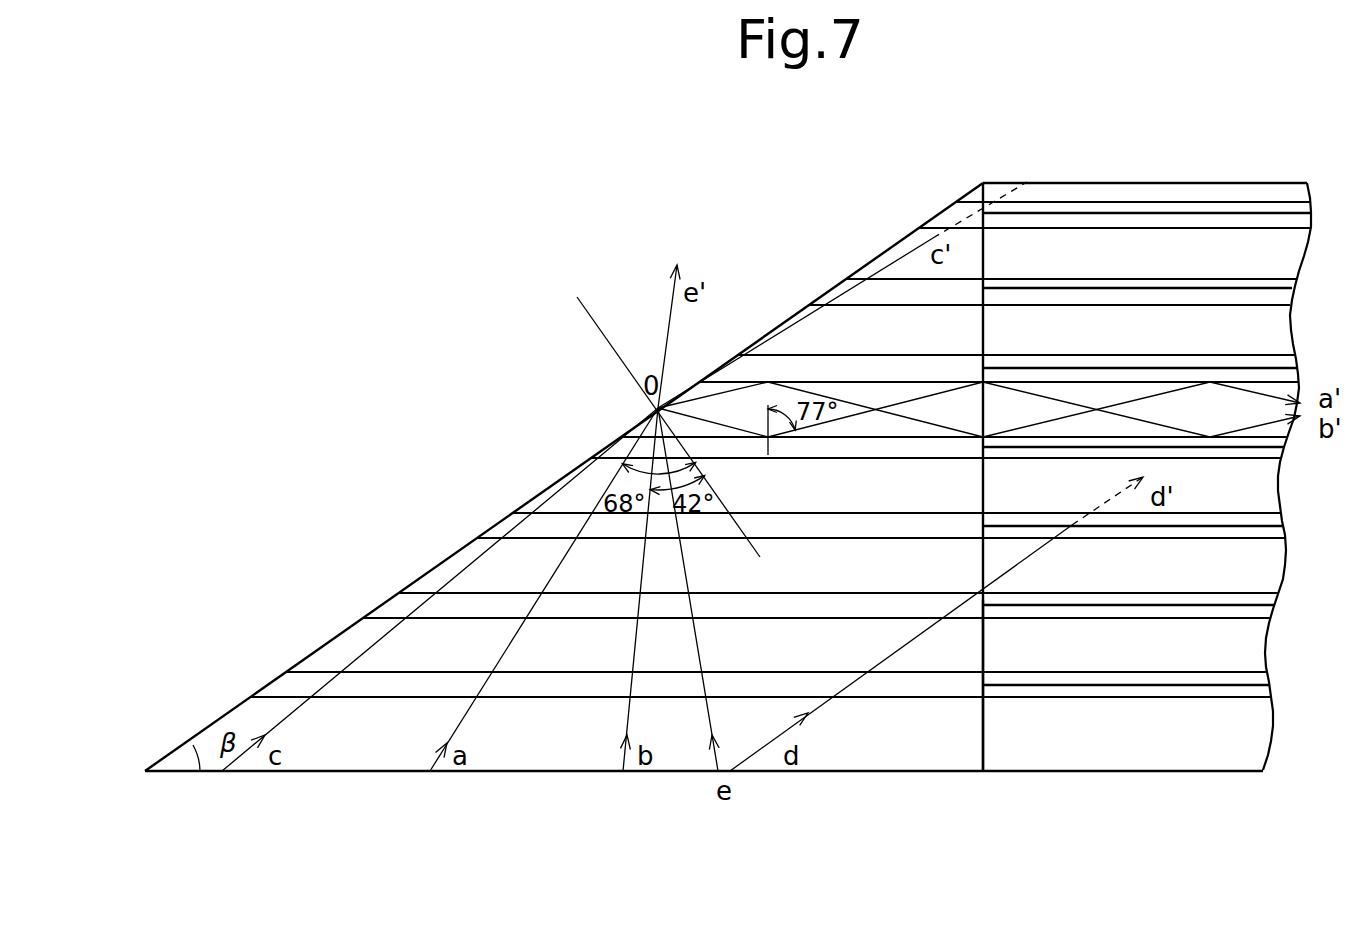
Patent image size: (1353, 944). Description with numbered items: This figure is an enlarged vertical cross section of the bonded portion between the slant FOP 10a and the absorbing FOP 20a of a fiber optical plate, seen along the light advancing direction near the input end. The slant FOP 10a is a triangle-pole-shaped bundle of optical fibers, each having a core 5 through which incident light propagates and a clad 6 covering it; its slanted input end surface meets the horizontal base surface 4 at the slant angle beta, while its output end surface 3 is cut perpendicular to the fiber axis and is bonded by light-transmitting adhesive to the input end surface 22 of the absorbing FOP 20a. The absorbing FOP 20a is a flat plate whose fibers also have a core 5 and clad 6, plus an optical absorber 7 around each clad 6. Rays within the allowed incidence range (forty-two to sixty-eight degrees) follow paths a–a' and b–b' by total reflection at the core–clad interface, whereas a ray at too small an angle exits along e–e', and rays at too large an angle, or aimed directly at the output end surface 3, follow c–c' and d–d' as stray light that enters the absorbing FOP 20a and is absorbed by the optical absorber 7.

The output end surface 3 is at (978, 740).
The light incident end face 4 is at (590, 773).
The core 5 is at (328, 650).
The clad 6 is at (292, 684).
The optical absorber 7 is at (1170, 232).
The slant FOP 10a is at (420, 774).
The absorbing FOP 20a is at (1097, 773).
The input end surface 22 is at (985, 740).